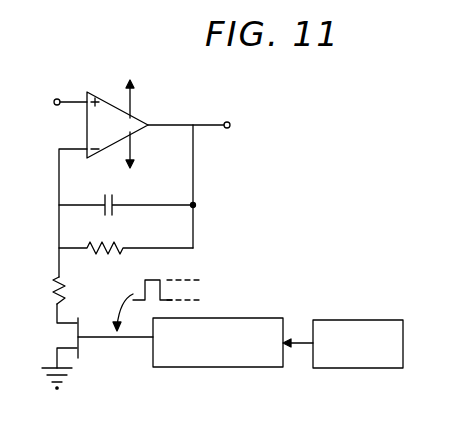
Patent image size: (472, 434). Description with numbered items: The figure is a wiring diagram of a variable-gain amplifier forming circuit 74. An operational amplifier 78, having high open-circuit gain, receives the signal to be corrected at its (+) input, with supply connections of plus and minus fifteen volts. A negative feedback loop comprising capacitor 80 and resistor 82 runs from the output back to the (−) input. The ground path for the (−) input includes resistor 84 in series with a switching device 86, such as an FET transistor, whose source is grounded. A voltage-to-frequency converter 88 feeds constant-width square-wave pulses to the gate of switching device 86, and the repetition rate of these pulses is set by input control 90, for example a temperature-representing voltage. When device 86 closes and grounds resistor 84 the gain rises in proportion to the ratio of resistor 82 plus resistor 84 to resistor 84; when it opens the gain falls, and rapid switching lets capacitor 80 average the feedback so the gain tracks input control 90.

The circuit 74 is at (221, 160).
The operational amplifier 78 is at (137, 112).
The capacitor 80 is at (109, 213).
The resistor 82 is at (112, 254).
The resistor 84 is at (52, 290).
The switching device 86 is at (70, 356).
The voltage-to-frequency converter 88 is at (257, 318).
The input control 90 is at (375, 320).